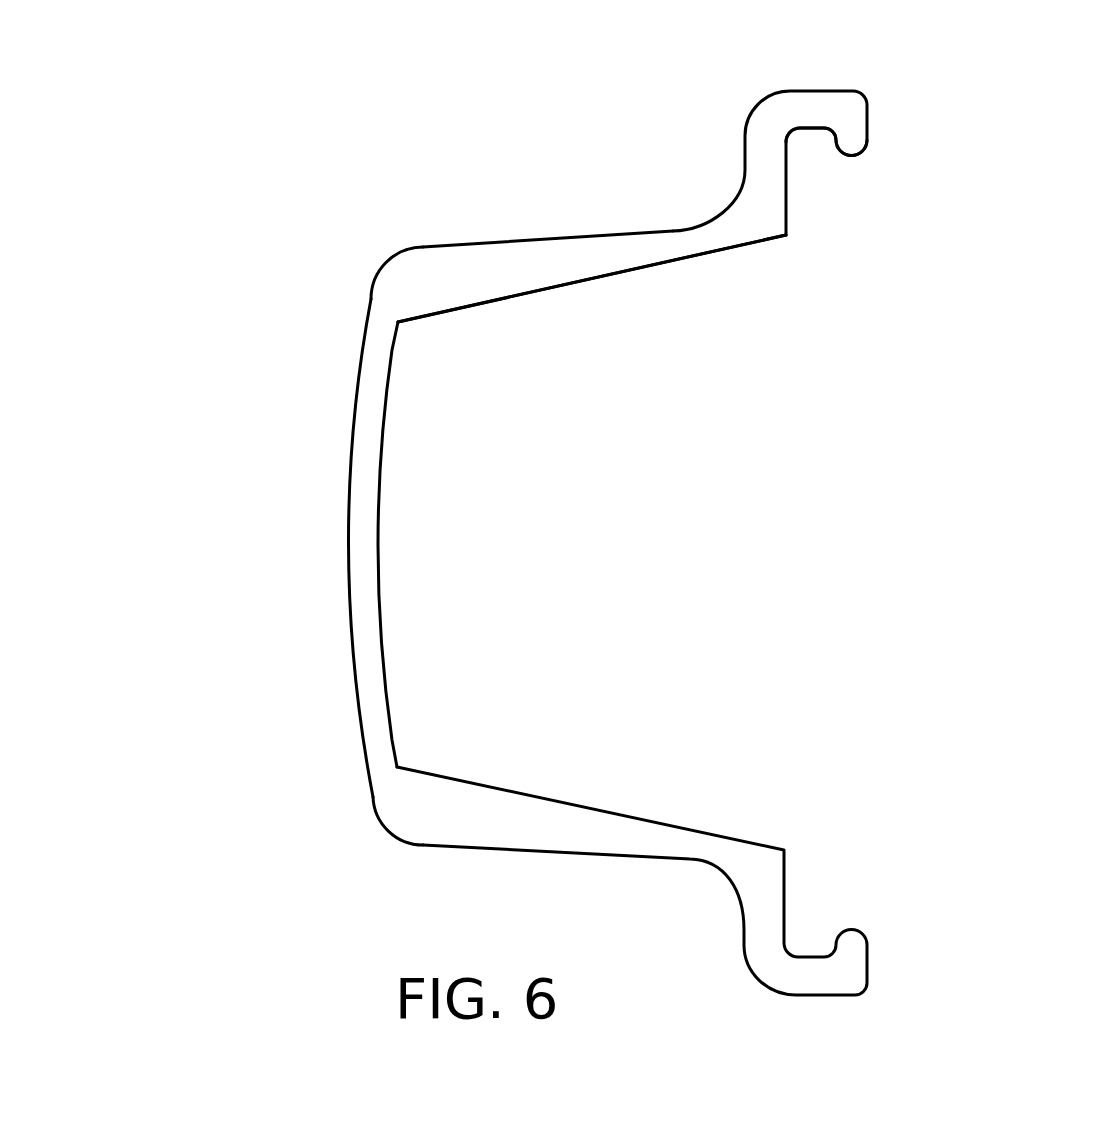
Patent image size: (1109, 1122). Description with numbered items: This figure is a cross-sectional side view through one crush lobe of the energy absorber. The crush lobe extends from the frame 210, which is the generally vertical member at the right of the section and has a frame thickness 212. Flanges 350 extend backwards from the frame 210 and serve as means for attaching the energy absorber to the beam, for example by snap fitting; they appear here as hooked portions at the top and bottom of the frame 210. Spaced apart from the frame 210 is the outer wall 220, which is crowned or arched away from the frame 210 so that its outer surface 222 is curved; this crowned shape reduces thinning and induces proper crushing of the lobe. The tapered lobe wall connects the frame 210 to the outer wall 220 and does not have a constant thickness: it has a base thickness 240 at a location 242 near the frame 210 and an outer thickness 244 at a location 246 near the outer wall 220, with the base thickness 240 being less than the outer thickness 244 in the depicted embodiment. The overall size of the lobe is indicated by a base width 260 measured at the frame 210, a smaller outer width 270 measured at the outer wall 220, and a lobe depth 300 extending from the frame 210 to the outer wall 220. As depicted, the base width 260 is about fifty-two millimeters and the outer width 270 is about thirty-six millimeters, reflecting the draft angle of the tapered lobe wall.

The frame 210 is at (765, 98).
The flanges 350 is at (848, 120).
The thickness of the frame 212 is at (823, 151).
The location near the frame 242 is at (693, 264).
The location near the outer wall 246 is at (452, 322).
The outer thickness 244 is at (424, 352).
The base thickness 240 is at (676, 175).
The outer surface 222 is at (347, 489).
The outer wall 220 is at (347, 593).
The base width 260 is at (690, 858).
The outer width 270 is at (395, 842).
The lobe depth 300 is at (745, 560).